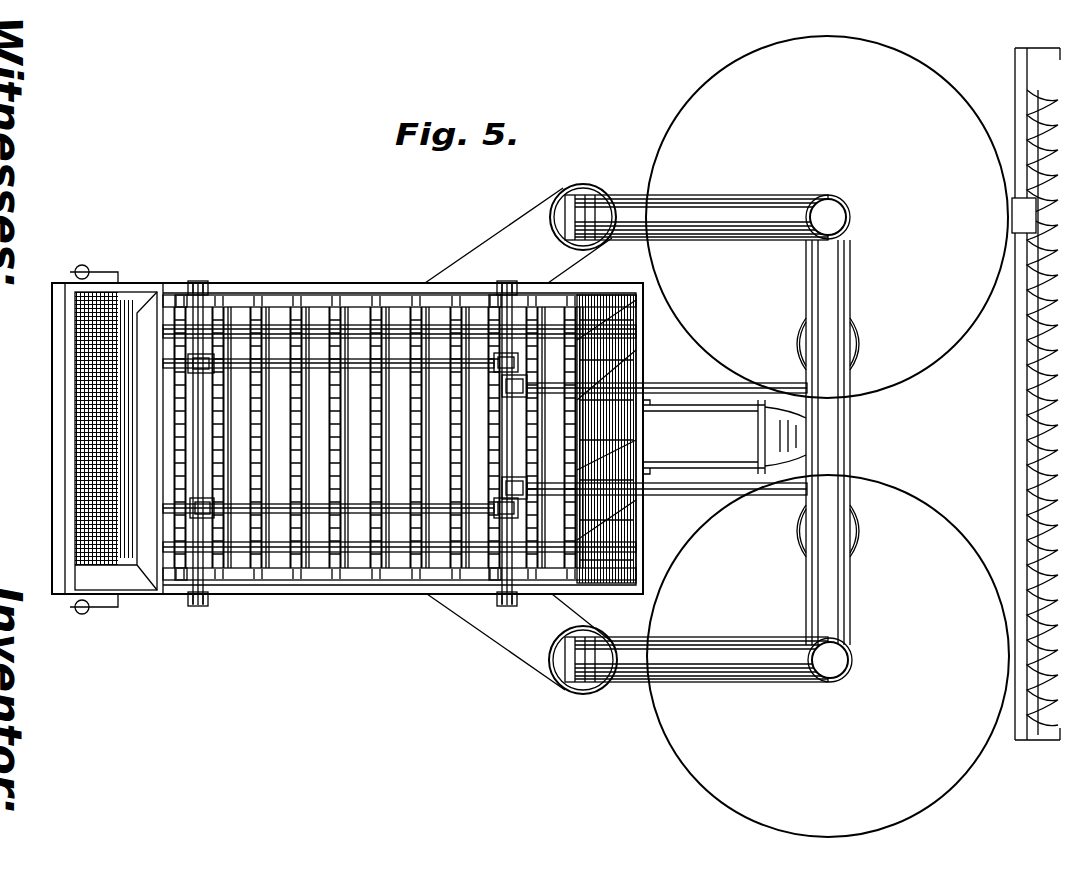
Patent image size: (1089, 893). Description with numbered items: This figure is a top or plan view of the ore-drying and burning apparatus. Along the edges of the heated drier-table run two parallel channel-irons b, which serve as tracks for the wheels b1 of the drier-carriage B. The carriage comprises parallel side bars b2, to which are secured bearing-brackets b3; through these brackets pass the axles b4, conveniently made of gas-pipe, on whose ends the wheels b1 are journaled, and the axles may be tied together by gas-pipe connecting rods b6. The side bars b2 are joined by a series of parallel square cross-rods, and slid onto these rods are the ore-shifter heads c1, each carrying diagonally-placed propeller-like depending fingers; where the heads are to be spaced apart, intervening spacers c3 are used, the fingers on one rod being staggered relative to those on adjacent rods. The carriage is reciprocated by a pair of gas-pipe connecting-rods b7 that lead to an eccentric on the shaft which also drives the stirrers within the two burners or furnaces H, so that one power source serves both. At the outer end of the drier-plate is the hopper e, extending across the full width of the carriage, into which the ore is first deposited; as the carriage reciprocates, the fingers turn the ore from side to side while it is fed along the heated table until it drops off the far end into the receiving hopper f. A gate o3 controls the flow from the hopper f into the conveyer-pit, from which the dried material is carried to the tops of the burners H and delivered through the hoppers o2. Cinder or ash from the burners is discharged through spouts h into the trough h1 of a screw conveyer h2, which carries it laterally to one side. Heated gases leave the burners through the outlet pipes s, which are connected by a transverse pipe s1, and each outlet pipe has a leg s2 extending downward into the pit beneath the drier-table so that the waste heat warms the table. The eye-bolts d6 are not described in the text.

The drier-carriage B is at (337, 325).
The channel-irons b is at (372, 293).
The wheels b1 is at (205, 281).
The side bars b2 is at (315, 600).
The bearing-brackets b3 is at (184, 292).
The axles b4 is at (210, 412).
The connecting rods b6 is at (348, 369).
The connecting-rods b7 is at (683, 384).
The ore-shifter heads c1 is at (258, 434).
The spacers c3 is at (378, 440).
The eye bolts d6 is at (119, 268).
The hopper e is at (116, 441).
The hopper f is at (598, 448).
The hoppers o2 is at (858, 345).
The gate o3 is at (643, 438).
The outlet pipes s is at (836, 205).
The transverse pipe s1 is at (851, 438).
The leg s2 is at (690, 232).
The burners H is at (680, 148).
The spouts h is at (1012, 218).
The trough h1 is at (1020, 430).
The screw conveyer h2 is at (1030, 368).